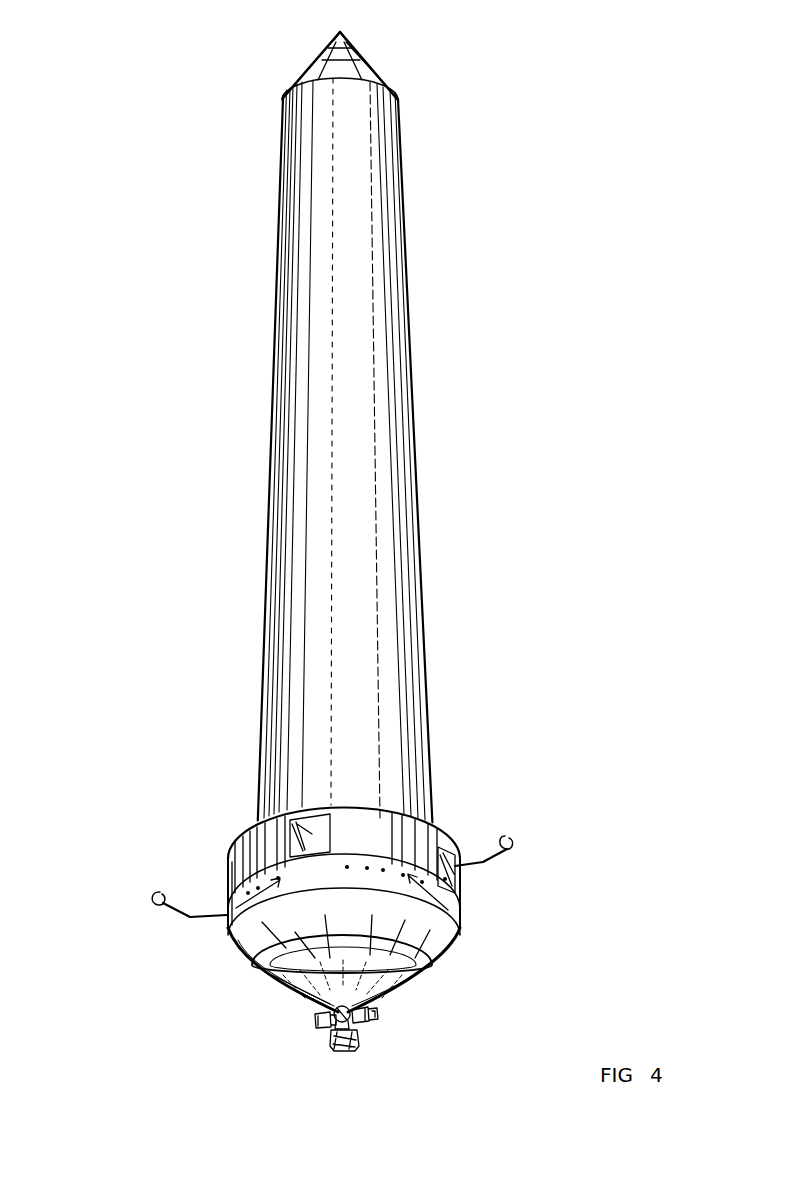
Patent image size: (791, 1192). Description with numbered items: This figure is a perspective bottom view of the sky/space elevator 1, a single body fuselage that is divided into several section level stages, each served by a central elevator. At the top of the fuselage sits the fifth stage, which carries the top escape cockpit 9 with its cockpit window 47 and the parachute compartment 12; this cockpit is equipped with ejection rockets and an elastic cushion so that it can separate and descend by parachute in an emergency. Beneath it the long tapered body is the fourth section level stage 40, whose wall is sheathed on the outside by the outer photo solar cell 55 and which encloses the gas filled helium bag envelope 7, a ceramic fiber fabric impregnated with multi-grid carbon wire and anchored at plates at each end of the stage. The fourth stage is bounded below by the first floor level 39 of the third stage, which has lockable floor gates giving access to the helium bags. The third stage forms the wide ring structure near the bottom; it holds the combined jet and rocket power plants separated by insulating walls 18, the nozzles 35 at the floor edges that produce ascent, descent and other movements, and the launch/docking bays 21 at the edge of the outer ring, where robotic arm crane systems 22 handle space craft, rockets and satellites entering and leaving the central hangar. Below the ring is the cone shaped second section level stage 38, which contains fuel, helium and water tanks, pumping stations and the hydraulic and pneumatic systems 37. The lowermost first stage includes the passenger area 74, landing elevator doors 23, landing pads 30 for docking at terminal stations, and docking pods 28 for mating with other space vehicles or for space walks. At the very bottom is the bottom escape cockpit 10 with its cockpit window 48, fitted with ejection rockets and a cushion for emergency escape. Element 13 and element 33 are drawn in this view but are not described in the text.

The tower assembly 1 is at (358, 55).
The parachute compartment 12 is at (337, 33).
The top escape cockpit 9 is at (324, 51).
The cockpit window 47 is at (320, 62).
The fourth section level stage 40 is at (382, 77).
The gas filled helium bag envelope 7 is at (297, 230).
The outer photo solar cell 55 is at (297, 437).
The cylindrical body 13 is at (365, 405).
The first floor level 39 is at (425, 670).
The insulating wall 18 is at (437, 833).
The launch/docking bay 21 is at (262, 816).
The second section level stage 38 is at (232, 862).
The nozzle 35 is at (456, 928).
The robotic arm crane system 22 is at (192, 916).
The landing elevator door 23 is at (443, 940).
The passenger area 74 is at (442, 942).
The hydraulic and pneumatic systems 37 is at (412, 975).
The bottom escape cockpit 10 is at (292, 988).
The cockpit window 48 is at (305, 1002).
The outlet coupling 33 is at (332, 1036).
The docking pod 28 is at (318, 1022).
The landing pad 30 is at (358, 1047).